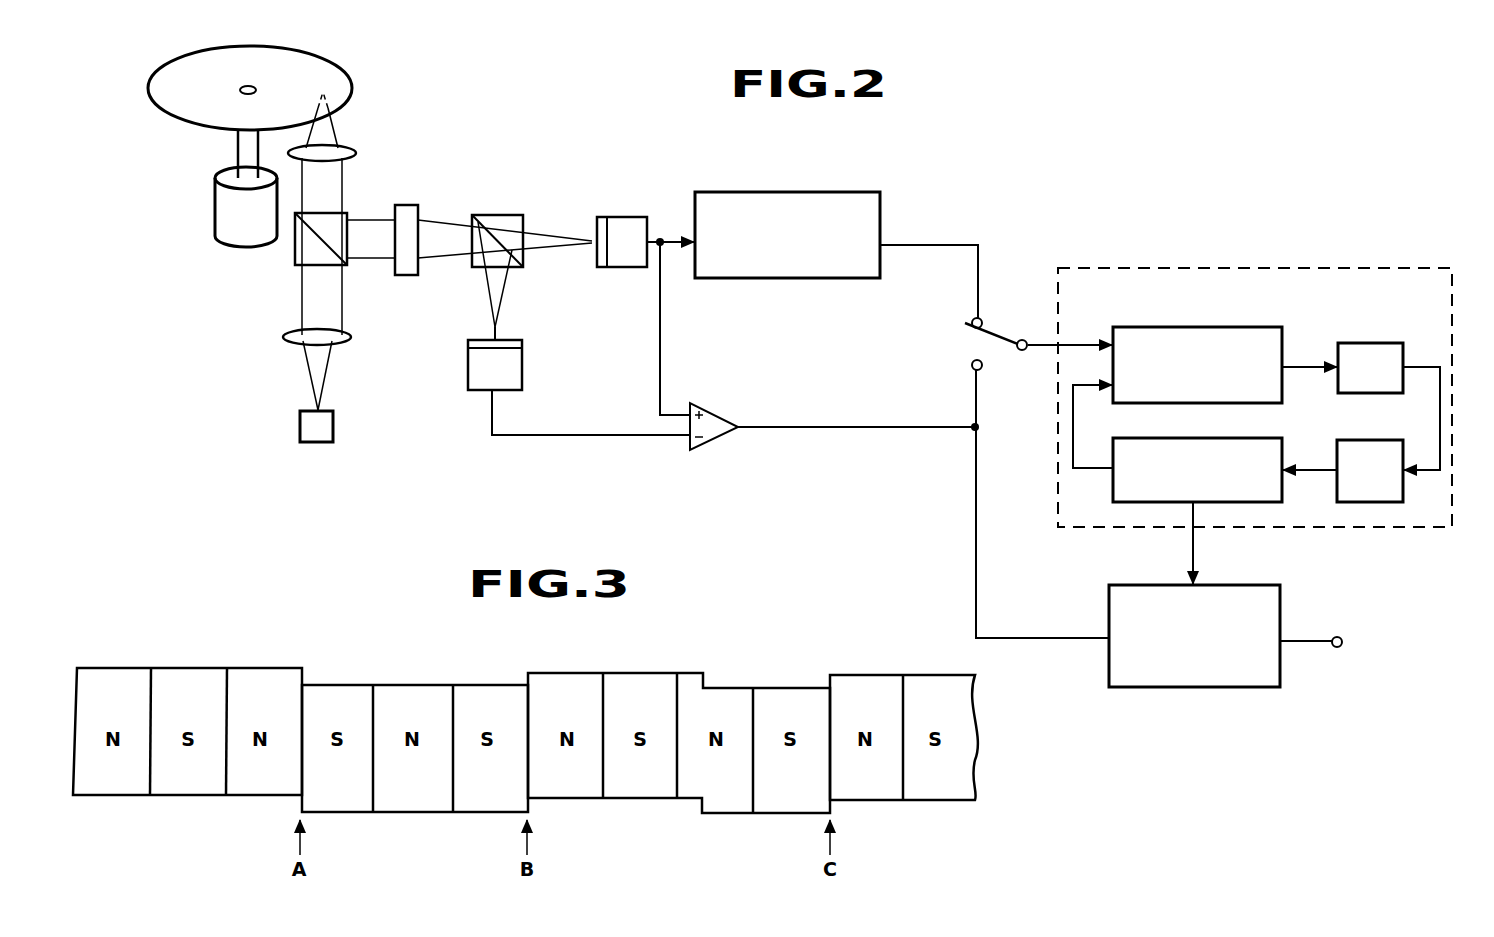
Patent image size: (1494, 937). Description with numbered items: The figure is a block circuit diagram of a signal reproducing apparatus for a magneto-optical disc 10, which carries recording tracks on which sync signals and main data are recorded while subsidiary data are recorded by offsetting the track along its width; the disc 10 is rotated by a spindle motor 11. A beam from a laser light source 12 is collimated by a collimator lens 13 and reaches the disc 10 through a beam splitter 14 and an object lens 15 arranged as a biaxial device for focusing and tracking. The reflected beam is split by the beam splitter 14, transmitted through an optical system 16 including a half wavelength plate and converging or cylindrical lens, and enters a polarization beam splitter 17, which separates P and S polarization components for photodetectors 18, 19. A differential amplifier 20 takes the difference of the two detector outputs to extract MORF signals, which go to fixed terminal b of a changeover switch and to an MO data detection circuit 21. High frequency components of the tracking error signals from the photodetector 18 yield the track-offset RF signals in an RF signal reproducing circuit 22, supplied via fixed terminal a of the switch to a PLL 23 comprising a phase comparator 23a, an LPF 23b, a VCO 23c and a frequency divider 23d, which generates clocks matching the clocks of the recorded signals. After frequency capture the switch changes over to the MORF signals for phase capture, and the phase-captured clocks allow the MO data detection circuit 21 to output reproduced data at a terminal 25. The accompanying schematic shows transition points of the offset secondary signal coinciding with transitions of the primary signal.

The magneto-optical disc 10 is at (184, 104).
The spindle motor 11 is at (215, 208).
The laser light source 12 is at (300, 420).
The collimator lens 13 is at (290, 335).
The beam splitter 14 is at (345, 213).
The object lens 15 is at (345, 150).
The optical system 16 is at (407, 205).
The polarization beam splitter 17 is at (497, 215).
The photodetector 18 is at (620, 217).
The photodetector 19 is at (522, 362).
The differential amplifier 20 is at (722, 405).
The MO data detection circuit 21 is at (1282, 608).
The RF signal reproducing circuit 22 is at (752, 192).
The PLL 23 is at (1215, 268).
The phase comparator 23a is at (1213, 327).
The LPF 23b is at (1365, 343).
The VCO 23c is at (1375, 440).
The frequency divider 23d is at (1263, 438).
The terminal 25 is at (1340, 637).